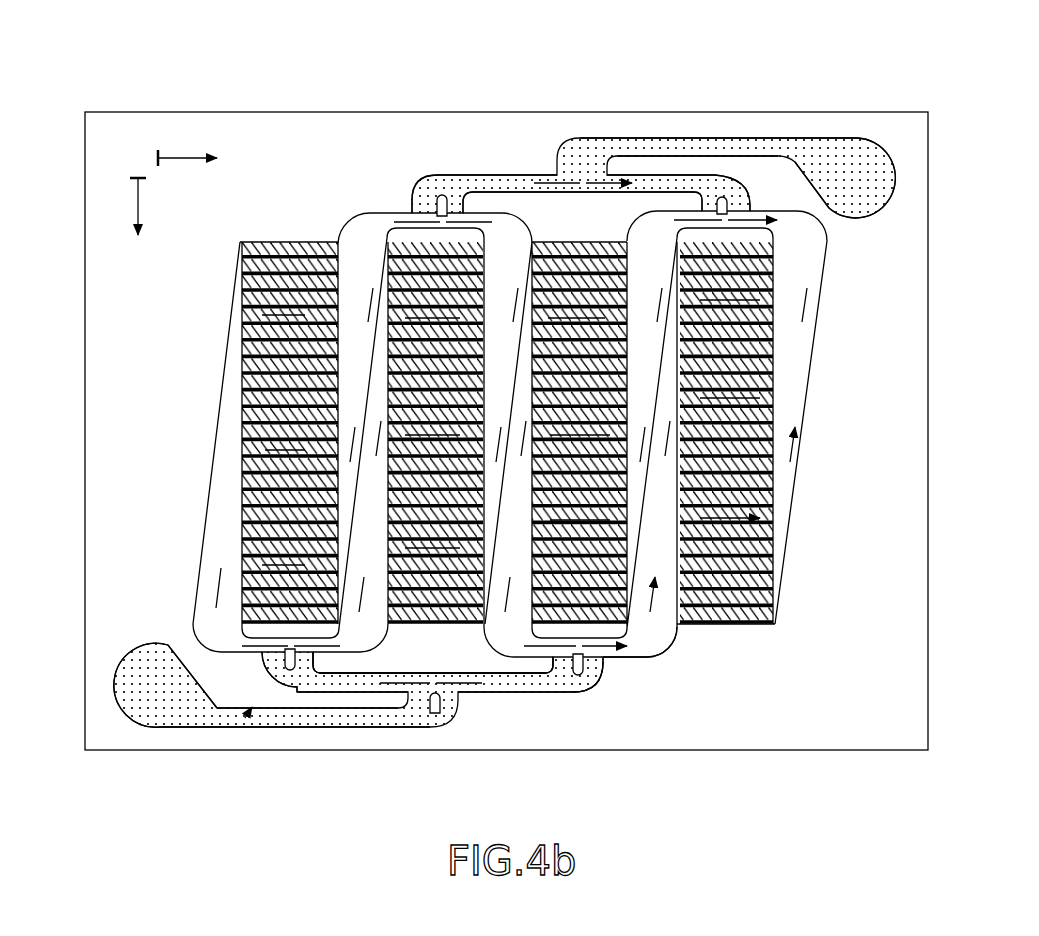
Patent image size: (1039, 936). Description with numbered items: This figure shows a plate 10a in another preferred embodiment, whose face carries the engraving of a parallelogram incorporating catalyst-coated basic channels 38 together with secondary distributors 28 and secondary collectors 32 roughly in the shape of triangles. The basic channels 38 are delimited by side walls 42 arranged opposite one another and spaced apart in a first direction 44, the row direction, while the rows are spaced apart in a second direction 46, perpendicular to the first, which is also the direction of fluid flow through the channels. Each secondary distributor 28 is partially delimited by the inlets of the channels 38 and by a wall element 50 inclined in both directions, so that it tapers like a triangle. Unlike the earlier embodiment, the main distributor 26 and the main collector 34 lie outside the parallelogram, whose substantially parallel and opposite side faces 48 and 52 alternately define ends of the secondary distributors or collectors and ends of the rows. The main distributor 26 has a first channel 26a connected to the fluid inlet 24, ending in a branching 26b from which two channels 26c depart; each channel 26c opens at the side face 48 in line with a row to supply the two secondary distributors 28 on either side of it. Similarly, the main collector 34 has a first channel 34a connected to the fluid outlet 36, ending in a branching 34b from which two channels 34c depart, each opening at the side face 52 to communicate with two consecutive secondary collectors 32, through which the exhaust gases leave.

The plate 10a is at (128, 88).
The fluid inlet 24 is at (160, 717).
The main fluid distributor 26 is at (250, 718).
The first channel 26a is at (307, 720).
The branching 26b is at (442, 702).
The channels 26c is at (363, 682).
The secondary fluid distributor 28 is at (238, 525).
The secondary fluid collector 32 is at (366, 376).
The main collector 34 is at (805, 136).
The first channel 34a is at (743, 137).
The branching 34b is at (573, 160).
The channels 34c is at (468, 192).
The fluid outlet 36 is at (877, 158).
The basic channels 38 is at (250, 298).
The side walls 42 is at (250, 375).
The first direction 44 is at (134, 183).
The second direction 46 is at (184, 157).
The side face 48 is at (650, 658).
The wall element 50 is at (210, 485).
The side face 52 is at (386, 213).